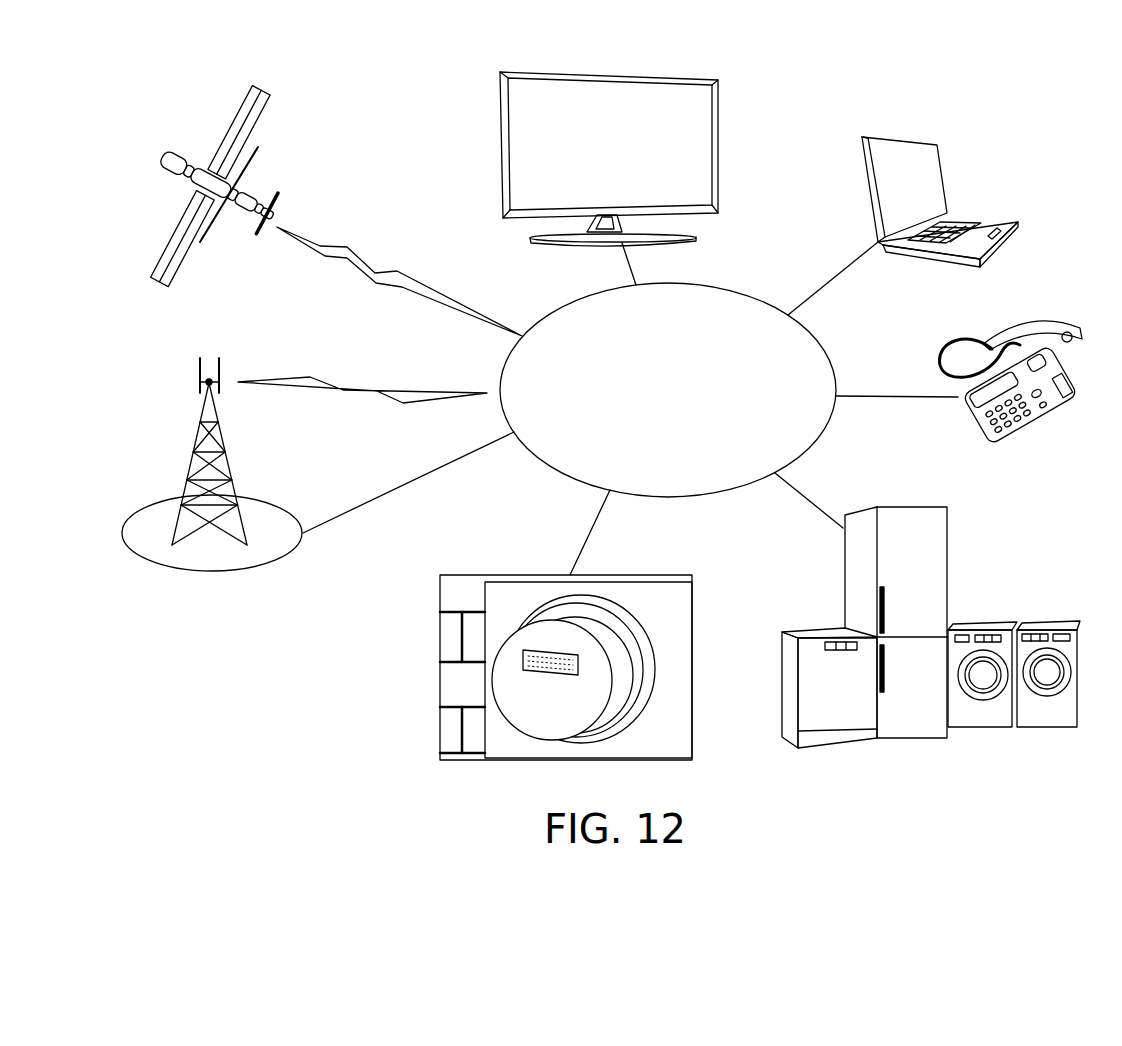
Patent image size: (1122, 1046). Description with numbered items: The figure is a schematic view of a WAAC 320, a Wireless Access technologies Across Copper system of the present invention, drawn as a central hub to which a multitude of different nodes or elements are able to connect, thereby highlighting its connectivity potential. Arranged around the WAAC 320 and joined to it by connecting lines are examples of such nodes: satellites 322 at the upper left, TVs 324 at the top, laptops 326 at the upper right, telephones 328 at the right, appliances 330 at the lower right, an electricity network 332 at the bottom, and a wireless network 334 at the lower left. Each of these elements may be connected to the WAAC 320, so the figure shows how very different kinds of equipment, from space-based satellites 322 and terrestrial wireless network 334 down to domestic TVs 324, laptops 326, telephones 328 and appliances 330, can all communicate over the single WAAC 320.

The WAAC 320 is at (702, 292).
The satellites 322 is at (250, 190).
The TVs 324 is at (717, 133).
The laptops 326 is at (963, 215).
The telephones 328 is at (1012, 442).
The appliances 330 is at (990, 622).
The electricity network 332 is at (658, 575).
The wireless network 334 is at (263, 497).